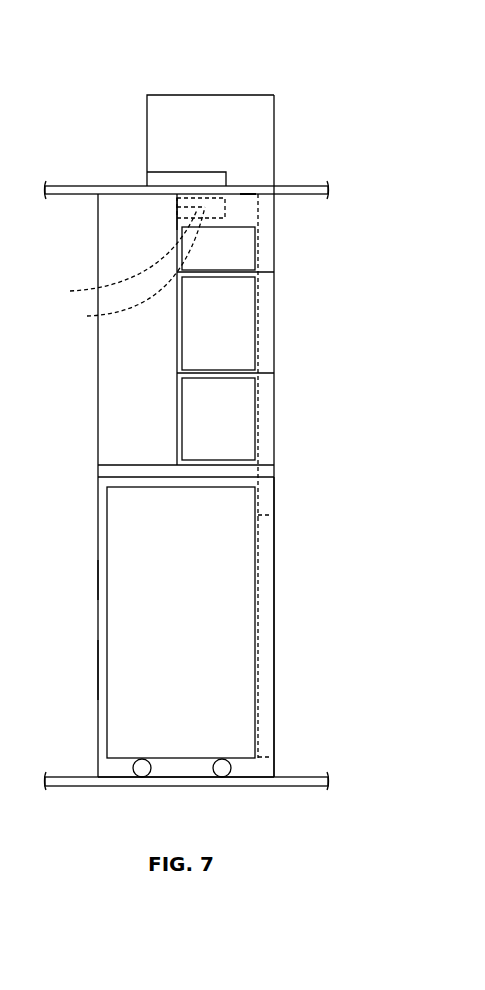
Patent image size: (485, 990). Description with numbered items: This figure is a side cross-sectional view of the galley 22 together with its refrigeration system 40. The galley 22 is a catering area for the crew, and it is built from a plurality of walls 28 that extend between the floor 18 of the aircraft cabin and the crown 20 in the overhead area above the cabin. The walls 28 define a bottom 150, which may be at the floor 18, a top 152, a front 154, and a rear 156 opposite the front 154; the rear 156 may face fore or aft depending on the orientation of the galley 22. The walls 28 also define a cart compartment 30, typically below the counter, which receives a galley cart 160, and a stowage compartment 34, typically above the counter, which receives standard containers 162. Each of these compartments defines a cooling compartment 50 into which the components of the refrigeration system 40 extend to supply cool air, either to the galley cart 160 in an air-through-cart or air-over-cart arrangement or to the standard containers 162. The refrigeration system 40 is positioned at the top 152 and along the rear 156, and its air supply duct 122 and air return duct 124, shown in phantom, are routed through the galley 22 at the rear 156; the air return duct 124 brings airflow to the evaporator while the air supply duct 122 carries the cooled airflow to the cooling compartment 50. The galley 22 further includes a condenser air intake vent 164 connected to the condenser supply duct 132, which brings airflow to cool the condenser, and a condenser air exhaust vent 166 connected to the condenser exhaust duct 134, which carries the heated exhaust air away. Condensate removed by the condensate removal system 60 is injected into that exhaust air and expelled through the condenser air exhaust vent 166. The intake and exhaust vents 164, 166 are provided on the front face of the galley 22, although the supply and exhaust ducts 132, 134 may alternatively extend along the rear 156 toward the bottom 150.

The floor 18 is at (287, 775).
The crown 20 is at (297, 186).
The galley 22 is at (290, 540).
The walls 28 is at (274, 397).
The cart compartment 30 is at (95, 668).
The stowage compartment 34 is at (240, 250).
The refrigeration system 40 is at (170, 78).
The cooling compartment 50 is at (240, 413).
The condensate removal system 60 is at (163, 162).
The air supply duct 122 is at (267, 497).
The air return duct 124 is at (267, 667).
The condenser supply duct 132 is at (113, 257).
The condenser exhaust duct 134 is at (125, 268).
The bottom 150 is at (178, 777).
The top 152 is at (247, 193).
The front 154 is at (98, 522).
The rear 156 is at (274, 343).
The galley cart 160 is at (138, 692).
The standard container 162 is at (237, 323).
The condenser air intake vent 164 is at (177, 203).
The condenser air exhaust vent 166 is at (177, 212).